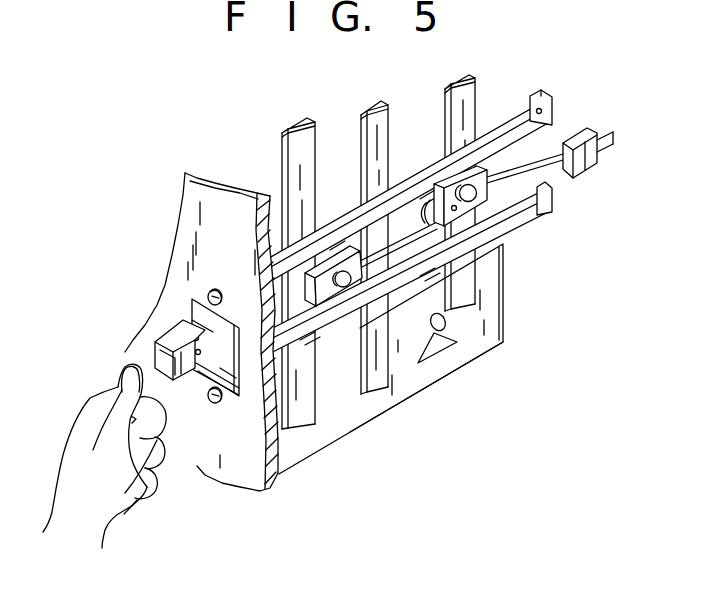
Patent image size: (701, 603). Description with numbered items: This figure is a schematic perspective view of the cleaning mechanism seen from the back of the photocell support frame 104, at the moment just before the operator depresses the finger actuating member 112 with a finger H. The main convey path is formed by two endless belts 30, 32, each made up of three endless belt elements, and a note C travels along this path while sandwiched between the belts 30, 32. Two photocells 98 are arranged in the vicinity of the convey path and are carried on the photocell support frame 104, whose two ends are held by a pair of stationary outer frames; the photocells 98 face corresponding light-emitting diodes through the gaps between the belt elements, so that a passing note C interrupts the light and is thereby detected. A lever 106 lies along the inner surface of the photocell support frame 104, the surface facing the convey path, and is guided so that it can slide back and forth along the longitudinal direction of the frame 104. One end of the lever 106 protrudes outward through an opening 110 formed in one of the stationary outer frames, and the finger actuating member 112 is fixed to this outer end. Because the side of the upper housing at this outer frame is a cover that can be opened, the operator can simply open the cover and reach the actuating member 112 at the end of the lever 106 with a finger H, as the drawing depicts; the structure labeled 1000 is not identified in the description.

The endless belt 30 is at (283, 140).
The endless belt 32 is at (300, 155).
The photocell 98 is at (481, 167).
The photocell support frame 104 is at (524, 214).
The lever 106 is at (208, 353).
The opening 110 is at (238, 390).
The finger actuating member 112 is at (167, 340).
The base member 1000 is at (391, 408).
The note C is at (418, 378).
The finger H is at (118, 387).